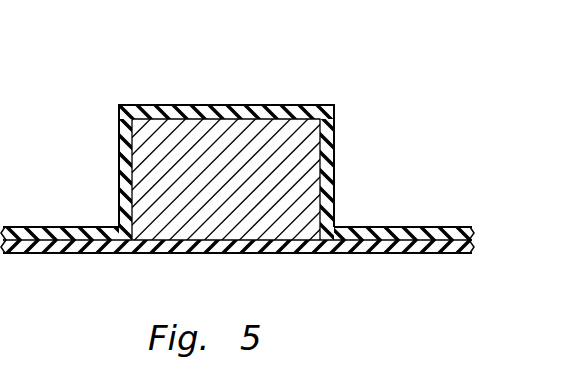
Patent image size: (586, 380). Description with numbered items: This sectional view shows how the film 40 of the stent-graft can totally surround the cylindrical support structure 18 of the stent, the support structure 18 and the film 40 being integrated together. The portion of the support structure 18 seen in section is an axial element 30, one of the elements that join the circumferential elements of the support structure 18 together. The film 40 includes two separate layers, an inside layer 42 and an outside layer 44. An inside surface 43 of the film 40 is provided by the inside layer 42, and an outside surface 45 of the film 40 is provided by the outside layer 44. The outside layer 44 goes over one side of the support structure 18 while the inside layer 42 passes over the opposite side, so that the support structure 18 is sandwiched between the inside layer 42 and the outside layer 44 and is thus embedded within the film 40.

The cylindrical support structure 18 is at (96, 103).
The axial element 30 is at (247, 140).
The film 40 is at (404, 151).
The inside layer 42 is at (372, 247).
The inside surface 43 is at (390, 253).
The outside layer 44 is at (172, 107).
The outside surface 45 is at (300, 107).